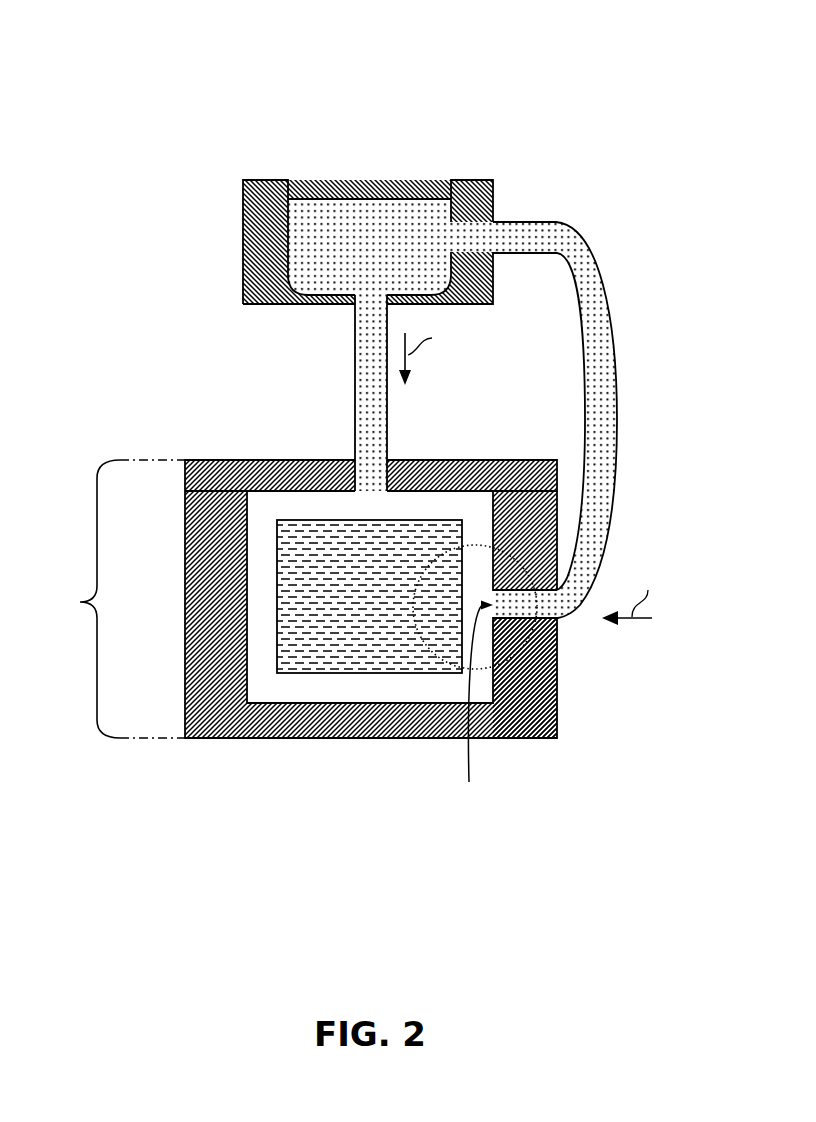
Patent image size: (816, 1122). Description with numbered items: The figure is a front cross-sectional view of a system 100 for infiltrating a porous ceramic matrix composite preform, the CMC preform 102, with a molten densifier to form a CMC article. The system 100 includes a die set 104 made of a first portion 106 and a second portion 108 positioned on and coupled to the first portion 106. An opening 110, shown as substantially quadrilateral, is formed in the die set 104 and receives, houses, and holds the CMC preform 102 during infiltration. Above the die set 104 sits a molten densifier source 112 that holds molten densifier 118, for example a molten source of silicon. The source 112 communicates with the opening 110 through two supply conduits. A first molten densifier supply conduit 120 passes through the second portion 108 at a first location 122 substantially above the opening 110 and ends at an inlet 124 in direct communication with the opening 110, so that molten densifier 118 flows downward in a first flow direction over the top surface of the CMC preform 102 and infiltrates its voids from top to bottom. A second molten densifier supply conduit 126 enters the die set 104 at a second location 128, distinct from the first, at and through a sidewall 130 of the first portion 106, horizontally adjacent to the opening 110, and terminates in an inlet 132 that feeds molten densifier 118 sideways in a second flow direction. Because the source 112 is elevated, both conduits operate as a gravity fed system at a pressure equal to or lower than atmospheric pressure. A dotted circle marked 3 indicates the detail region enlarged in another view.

The system 100 is at (431, 88).
The CMC preform 102 is at (415, 674).
The die set 104 is at (80, 602).
The first portion 106 is at (185, 653).
The second portion 108 is at (185, 478).
The opening 110 is at (272, 703).
The molten densifier source 112 is at (243, 258).
The molten densifier 118 is at (322, 199).
The first molten densifier supply conduit 120 is at (354, 342).
The first location 122 is at (395, 449).
The inlet 124 is at (363, 497).
The second molten densifier supply conduit 126 is at (583, 330).
The second location 128 is at (565, 630).
The sidewall 130 is at (570, 721).
The inlet 132 is at (472, 705).
The detail region of FIG. 3 is at (477, 545).